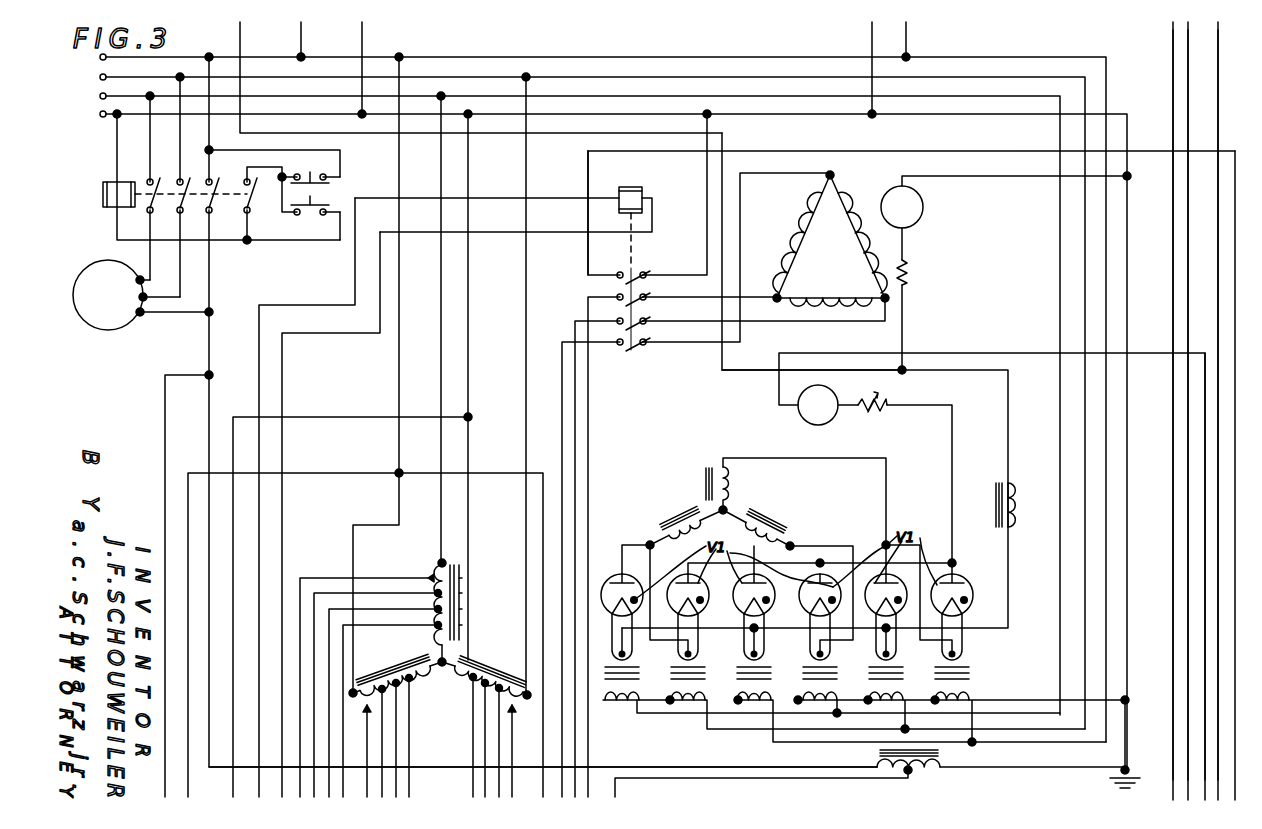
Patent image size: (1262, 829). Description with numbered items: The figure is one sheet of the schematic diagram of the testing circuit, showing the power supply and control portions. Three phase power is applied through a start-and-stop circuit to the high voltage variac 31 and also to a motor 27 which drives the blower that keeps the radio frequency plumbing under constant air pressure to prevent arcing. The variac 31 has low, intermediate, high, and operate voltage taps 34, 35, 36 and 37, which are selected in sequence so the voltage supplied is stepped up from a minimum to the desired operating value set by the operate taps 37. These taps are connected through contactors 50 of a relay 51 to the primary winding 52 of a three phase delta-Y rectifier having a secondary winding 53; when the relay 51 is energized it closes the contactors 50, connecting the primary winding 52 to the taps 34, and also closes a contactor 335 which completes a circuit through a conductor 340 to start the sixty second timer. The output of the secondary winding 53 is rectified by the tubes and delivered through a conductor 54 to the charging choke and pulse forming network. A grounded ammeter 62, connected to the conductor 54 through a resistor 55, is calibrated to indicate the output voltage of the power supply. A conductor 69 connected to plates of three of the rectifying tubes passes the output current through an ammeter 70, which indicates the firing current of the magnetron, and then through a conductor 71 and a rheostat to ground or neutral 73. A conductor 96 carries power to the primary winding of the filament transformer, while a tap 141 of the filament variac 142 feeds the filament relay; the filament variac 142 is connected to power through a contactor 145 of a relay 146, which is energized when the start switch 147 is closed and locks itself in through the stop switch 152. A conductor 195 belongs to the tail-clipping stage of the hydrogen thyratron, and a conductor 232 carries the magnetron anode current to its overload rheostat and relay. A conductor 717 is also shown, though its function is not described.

The motor 27 is at (110, 318).
The high voltage variac 31 is at (450, 679).
The low voltage taps 34 is at (462, 625).
The intermediate voltage taps 35 is at (462, 609).
The high voltage taps 36 is at (462, 593).
The operate voltage taps 37 is at (462, 577).
The contactors 50 is at (650, 300).
The relay 51 is at (630, 190).
The primary winding 52 is at (805, 217).
The secondary winding 53 is at (742, 504).
The conductor 54 is at (240, 37).
The resistor 55 is at (905, 262).
The ammeter 62 is at (905, 203).
The conductor 69 is at (952, 445).
The ammeter 70 is at (810, 412).
The conductor 71 is at (1205, 708).
The ground or neutral 73 is at (139, 114).
The conductor 96 is at (1218, 70).
The tap 141 is at (908, 772).
The filament variac 142 is at (940, 753).
The contactor 145 is at (213, 197).
The relay 146 is at (115, 198).
The start switch 147 is at (308, 216).
The stop switch 152 is at (343, 188).
The conductor 195 is at (1173, 37).
The conductor 232 is at (1188, 55).
The contactor 335 is at (645, 272).
The conductor 340 is at (588, 240).
The conductor 717 is at (812, 353).